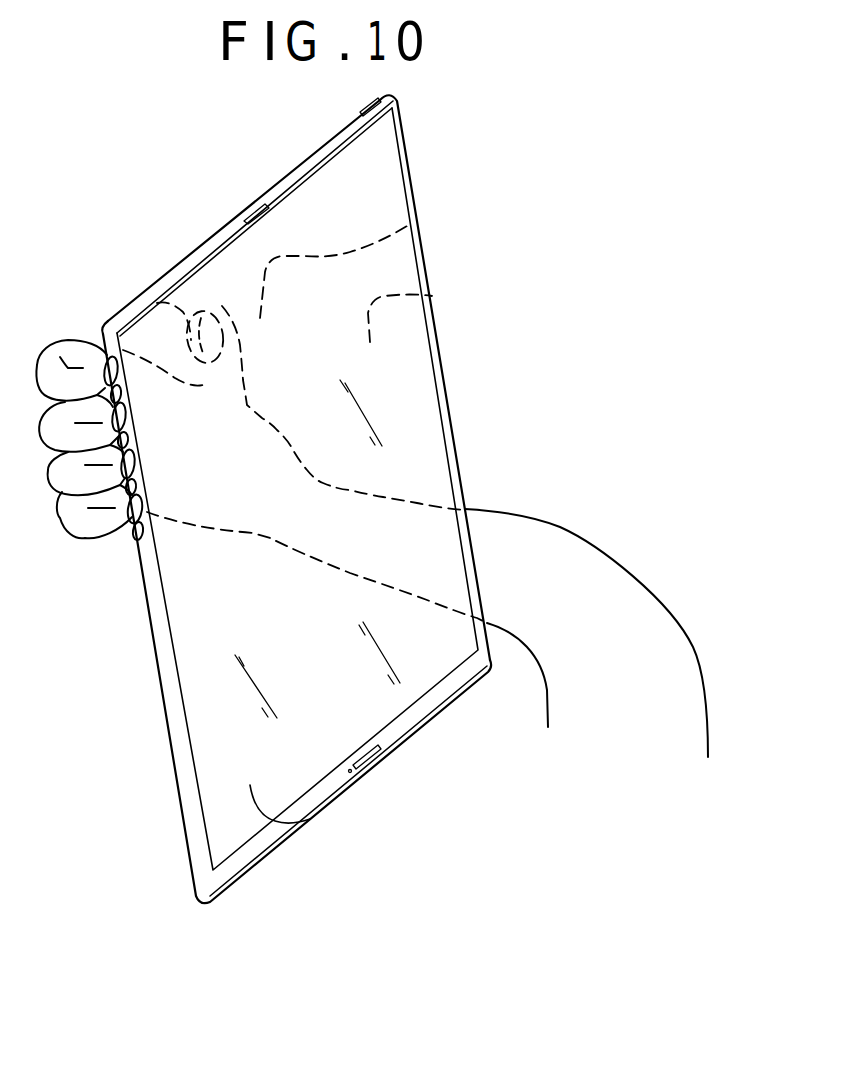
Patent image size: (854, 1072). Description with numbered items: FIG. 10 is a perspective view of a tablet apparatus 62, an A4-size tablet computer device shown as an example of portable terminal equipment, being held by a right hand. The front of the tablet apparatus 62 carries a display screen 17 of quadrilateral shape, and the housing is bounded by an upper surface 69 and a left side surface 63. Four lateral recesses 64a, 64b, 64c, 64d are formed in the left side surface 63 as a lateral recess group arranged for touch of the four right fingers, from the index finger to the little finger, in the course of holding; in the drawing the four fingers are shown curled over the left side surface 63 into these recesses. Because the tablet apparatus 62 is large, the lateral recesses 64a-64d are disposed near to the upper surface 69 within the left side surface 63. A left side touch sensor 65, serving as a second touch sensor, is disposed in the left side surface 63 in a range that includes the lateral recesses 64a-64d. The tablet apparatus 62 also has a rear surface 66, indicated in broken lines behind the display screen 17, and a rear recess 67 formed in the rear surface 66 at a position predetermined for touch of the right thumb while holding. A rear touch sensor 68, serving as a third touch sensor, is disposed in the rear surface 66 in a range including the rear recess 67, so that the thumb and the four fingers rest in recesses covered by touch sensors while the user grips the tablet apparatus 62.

The display screen 17 is at (307, 820).
The tablet apparatus 62 is at (236, 171).
The left side surface 63 is at (167, 733).
The lateral recess 64a is at (121, 386).
The lateral recess 64b is at (130, 432).
The lateral recess 64c is at (138, 477).
The lateral recess 64d is at (146, 524).
The left side touch sensor 65 is at (163, 625).
The rear surface 66 is at (430, 296).
The rear recess 67 is at (145, 312).
The rear touch sensor 68 is at (410, 226).
The upper surface 69 is at (293, 172).